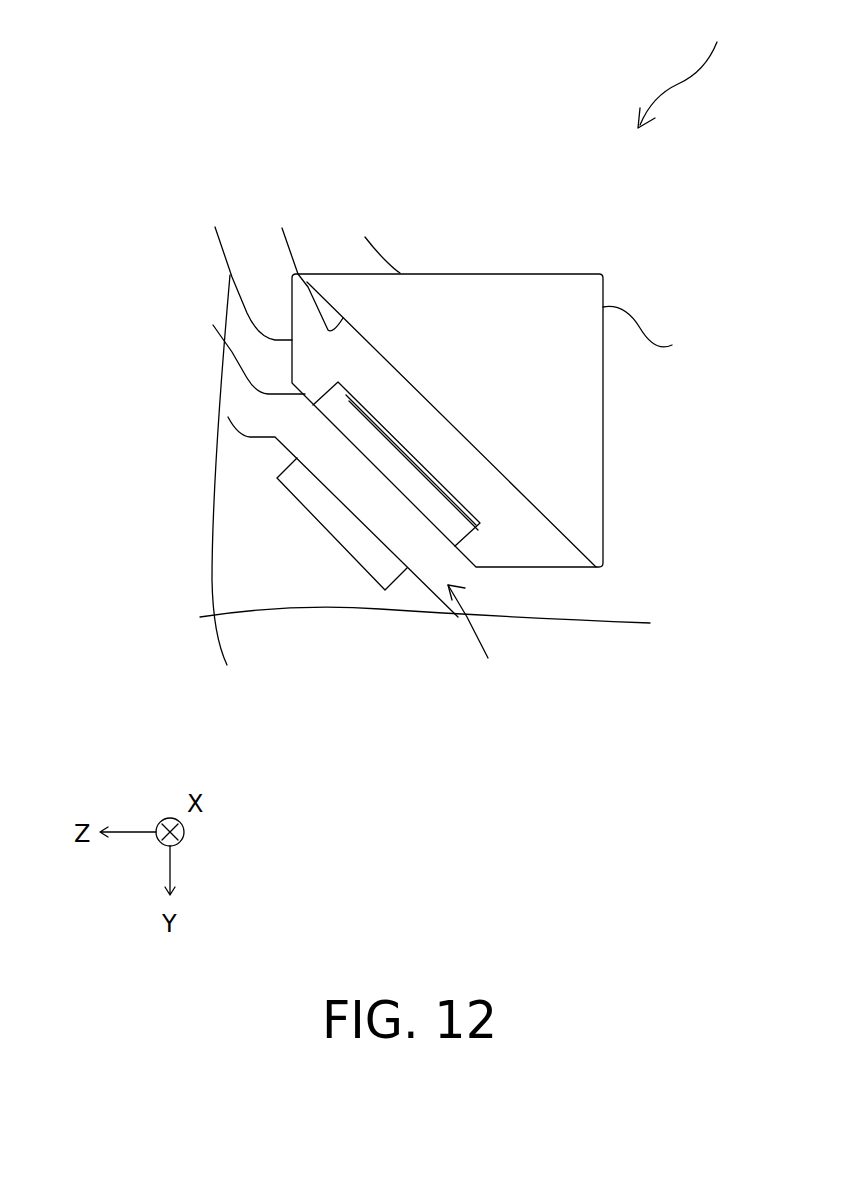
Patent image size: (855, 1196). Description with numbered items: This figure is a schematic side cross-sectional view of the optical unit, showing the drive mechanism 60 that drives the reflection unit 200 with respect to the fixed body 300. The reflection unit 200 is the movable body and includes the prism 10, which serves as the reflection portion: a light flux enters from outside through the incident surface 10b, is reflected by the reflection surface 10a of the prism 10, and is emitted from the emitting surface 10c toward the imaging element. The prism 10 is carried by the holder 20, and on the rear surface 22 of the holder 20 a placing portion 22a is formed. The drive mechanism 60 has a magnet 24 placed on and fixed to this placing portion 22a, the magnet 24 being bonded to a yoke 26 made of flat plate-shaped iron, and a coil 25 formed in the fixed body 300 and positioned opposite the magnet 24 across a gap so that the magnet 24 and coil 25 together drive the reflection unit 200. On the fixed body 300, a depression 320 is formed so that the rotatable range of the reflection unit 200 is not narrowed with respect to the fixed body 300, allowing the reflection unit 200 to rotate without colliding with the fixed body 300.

The reflection unit 200 is at (691, 71).
The prism 10 is at (577, 273).
The reflection surface 10a is at (301, 264).
The incident surface 10b is at (370, 240).
The emitting surface 10c is at (661, 332).
The holder 20 is at (247, 269).
The rear surface 22 is at (326, 455).
The placing portion 22a is at (352, 403).
The magnet 24 is at (422, 497).
The yoke 26 is at (398, 442).
The coil 25 is at (366, 570).
The drive mechanism 60 is at (487, 638).
The fixed body 300 is at (263, 580).
The depression 320 is at (236, 428).